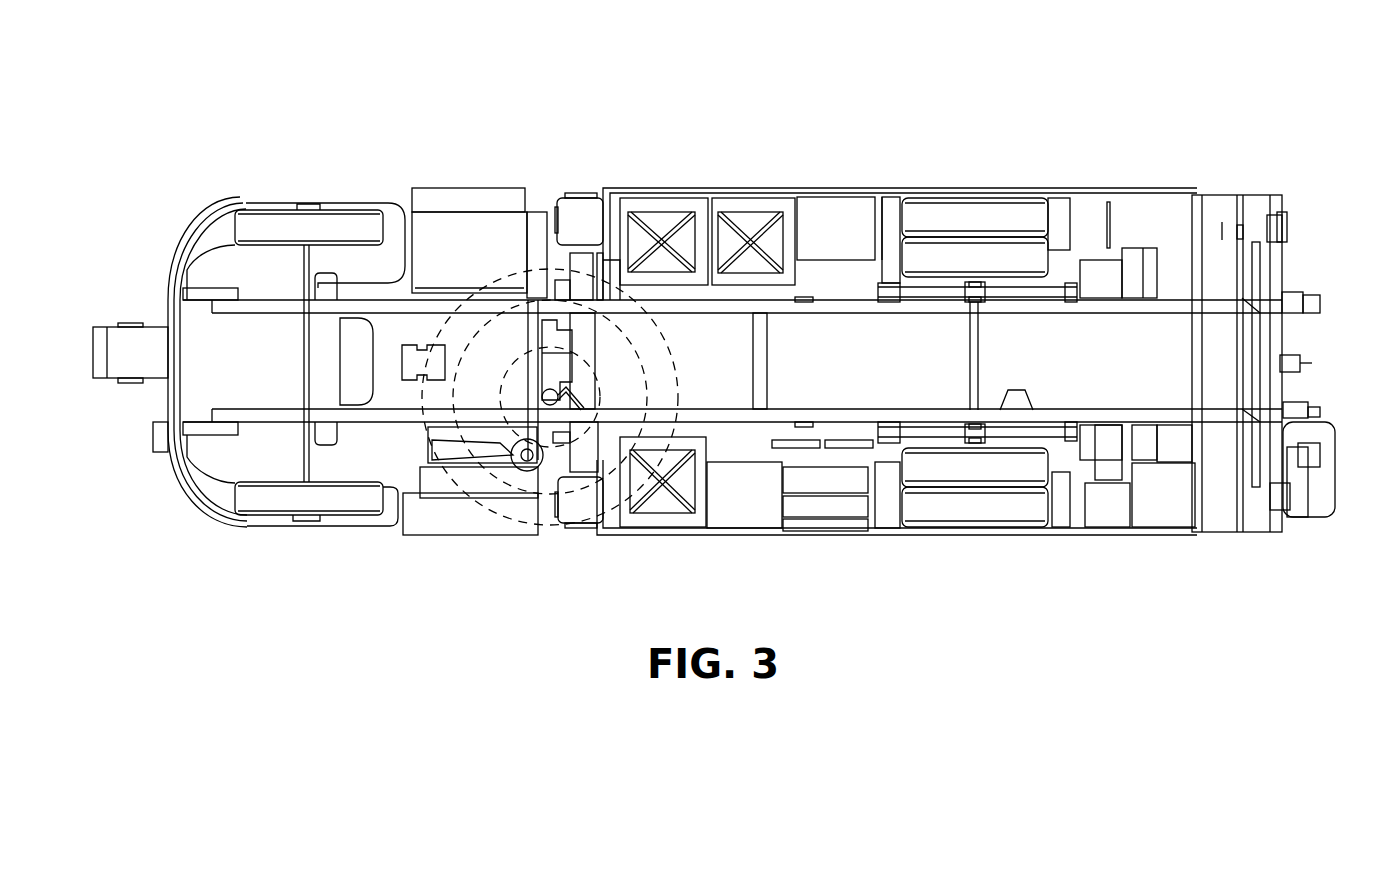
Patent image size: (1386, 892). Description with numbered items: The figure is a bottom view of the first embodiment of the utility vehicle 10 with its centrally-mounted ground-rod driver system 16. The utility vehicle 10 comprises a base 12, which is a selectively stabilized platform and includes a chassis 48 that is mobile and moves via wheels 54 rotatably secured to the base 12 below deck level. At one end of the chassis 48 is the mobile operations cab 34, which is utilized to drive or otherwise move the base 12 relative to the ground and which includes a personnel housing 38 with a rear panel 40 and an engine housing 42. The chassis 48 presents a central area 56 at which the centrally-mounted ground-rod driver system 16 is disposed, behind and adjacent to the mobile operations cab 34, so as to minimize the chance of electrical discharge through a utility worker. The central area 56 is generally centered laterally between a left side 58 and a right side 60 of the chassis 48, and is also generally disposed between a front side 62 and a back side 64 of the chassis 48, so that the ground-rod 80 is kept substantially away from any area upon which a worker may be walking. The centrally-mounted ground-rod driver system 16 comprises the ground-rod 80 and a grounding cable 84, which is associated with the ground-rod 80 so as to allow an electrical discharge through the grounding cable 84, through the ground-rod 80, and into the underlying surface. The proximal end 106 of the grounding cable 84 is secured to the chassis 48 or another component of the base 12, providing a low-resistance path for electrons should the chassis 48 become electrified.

The utility vehicle 10 is at (734, 344).
The base 12 is at (968, 118).
The centrally-mounted ground-rod driver system 16 is at (550, 550).
The mobile operations cab 34 is at (352, 145).
The personnel housing 38 is at (407, 210).
The rear panel 40 is at (533, 308).
The engine housing 42 is at (199, 222).
The chassis 48 is at (1160, 308).
The wheels 54 is at (284, 216).
The central area 56 is at (672, 326).
The left side 58 is at (647, 118).
The right side 60 is at (647, 582).
The front side 62 is at (143, 252).
The back side 64 is at (1330, 273).
The ground-rod 80 is at (542, 392).
The grounding cable 84 is at (586, 374).
The proximal end 106 is at (591, 400).